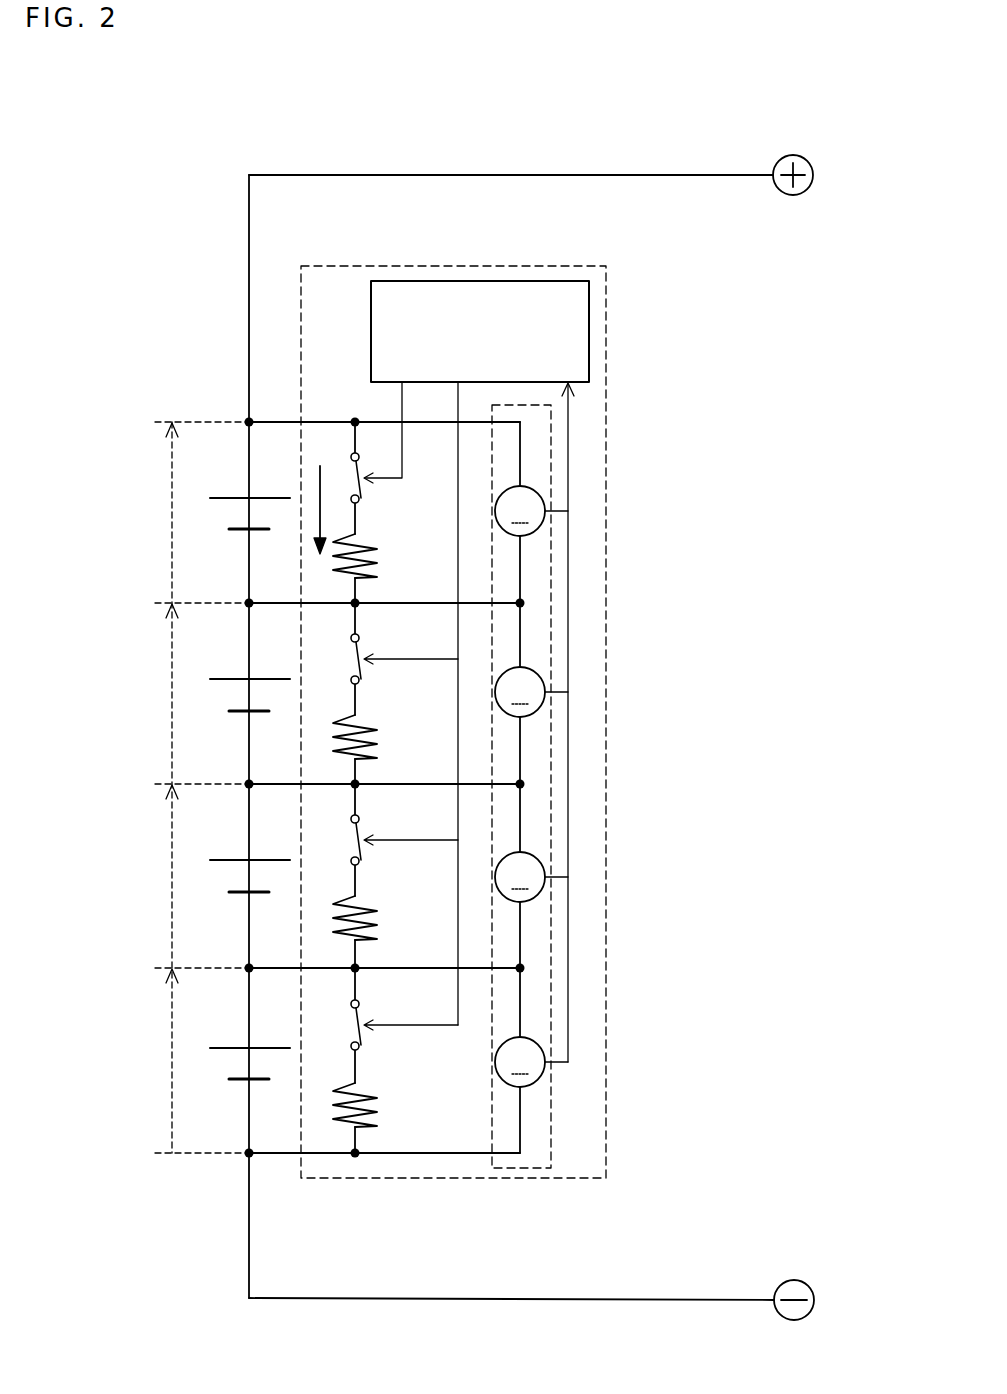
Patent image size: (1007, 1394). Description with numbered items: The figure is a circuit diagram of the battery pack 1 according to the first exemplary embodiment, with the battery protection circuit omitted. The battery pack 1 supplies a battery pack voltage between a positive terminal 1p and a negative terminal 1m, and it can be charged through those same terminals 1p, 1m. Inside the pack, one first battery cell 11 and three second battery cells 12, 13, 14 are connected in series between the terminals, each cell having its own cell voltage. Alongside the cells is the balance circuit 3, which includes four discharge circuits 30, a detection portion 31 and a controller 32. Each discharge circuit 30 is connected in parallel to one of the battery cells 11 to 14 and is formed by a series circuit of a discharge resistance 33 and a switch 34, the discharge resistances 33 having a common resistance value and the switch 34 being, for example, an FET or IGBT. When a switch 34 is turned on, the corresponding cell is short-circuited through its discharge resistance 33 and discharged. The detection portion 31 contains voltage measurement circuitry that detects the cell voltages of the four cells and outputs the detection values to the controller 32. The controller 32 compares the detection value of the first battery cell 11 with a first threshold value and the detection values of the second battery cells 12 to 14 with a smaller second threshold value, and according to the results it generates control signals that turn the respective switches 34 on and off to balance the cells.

The battery pack 1 is at (182, 66).
The positive terminal 1p is at (790, 156).
The negative terminal 1m is at (790, 1321).
The balance circuit 3 is at (443, 266).
The first battery cell 11 is at (238, 497).
The second battery cell 12 is at (238, 678).
The second battery cell 13 is at (238, 859).
The second battery cell 14 is at (238, 1047).
The discharge circuit 30 is at (513, 1235).
The detection portion 31 is at (549, 1126).
The controller 32 is at (371, 338).
The discharge resistance 33 is at (365, 1125).
The switch 34 is at (362, 1052).